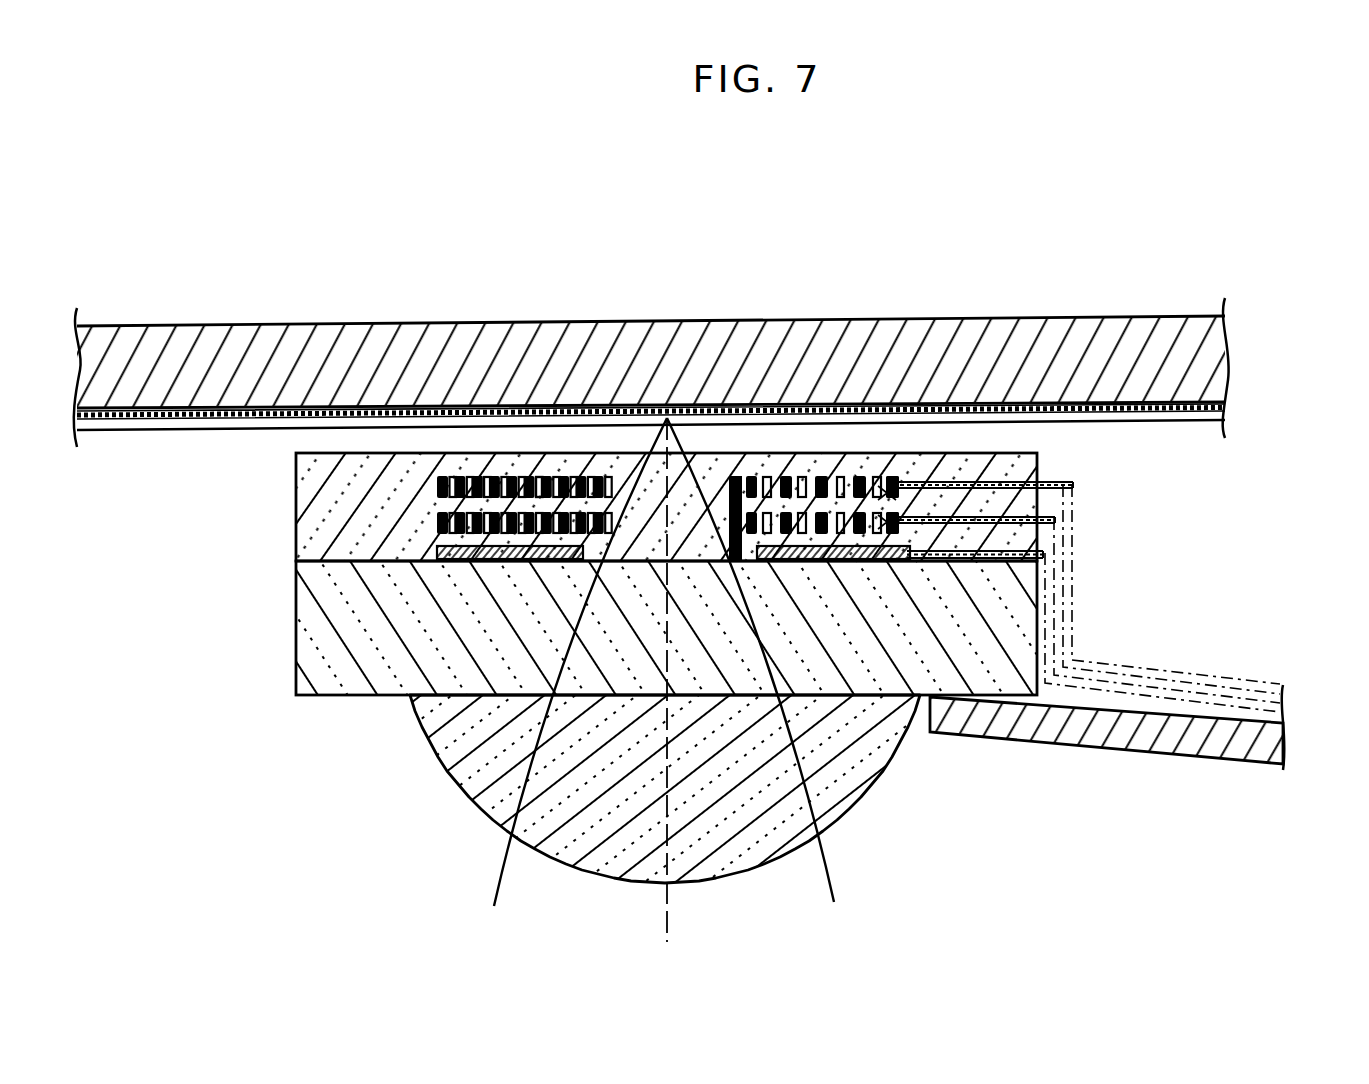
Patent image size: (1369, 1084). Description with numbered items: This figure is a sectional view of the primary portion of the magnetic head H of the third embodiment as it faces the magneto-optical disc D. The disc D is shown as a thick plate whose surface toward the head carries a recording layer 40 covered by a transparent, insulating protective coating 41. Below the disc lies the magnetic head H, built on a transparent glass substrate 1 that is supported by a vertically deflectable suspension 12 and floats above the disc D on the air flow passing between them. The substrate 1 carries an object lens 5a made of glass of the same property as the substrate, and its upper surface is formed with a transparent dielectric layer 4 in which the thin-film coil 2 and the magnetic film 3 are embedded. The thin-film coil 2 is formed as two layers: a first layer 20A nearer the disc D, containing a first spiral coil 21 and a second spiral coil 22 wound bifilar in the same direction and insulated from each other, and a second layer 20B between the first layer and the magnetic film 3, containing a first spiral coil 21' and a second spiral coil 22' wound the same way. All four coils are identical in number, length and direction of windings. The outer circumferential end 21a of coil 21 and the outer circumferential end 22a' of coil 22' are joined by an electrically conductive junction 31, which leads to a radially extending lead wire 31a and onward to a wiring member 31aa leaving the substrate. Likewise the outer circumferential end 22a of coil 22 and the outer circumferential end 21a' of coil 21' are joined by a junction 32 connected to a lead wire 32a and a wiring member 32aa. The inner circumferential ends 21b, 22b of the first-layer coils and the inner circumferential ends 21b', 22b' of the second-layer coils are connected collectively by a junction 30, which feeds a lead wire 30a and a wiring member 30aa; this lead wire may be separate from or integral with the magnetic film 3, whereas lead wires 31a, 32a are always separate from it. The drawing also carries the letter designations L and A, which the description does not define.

The transparent substrate 1 is at (296, 614).
The thin-film coil 2 is at (414, 368).
The magnetic film 3 is at (320, 521).
The transparent dielectric layer 4 is at (308, 533).
The object lens 5a is at (880, 739).
The suspension 12 is at (1150, 720).
The first layer 20A is at (438, 523).
The second layer 20B is at (438, 488).
The first spiral coil 21 is at (492, 371).
The second spiral coil 22 is at (549, 370).
The outer circumferential end 21a is at (928, 390).
The outer circumferential end 22a is at (873, 377).
The inner circumferential end 21b is at (822, 393).
The inner circumferential end 22b is at (795, 410).
The first spiral coil 21' is at (467, 588).
The second spiral coil 22' is at (510, 587).
The outer circumferential end 21a' is at (918, 585).
The outer circumferential end 22a' is at (870, 585).
The inner circumferential end 21b' is at (711, 579).
The inner circumferential end 22b' is at (612, 581).
The electrically conductive junction 30 is at (750, 567).
The electrically conductive junction 31 is at (1122, 318).
The electrically conductive junction 32 is at (886, 490).
The lead wire 30a is at (1053, 541).
The lead wire 31a is at (1037, 501).
The lead wire 32a is at (1033, 467).
The wiring member 30aa is at (1240, 677).
The wiring member 31aa is at (1171, 671).
The wiring member 32aa is at (1106, 661).
The recording layer 40 is at (96, 420).
The protective coating 41 is at (128, 430).
The magneto-optical disc D is at (1020, 300).
The magnetic head H is at (339, 791).
The ultrasonic beam L is at (829, 846).
The central axis A is at (679, 680).